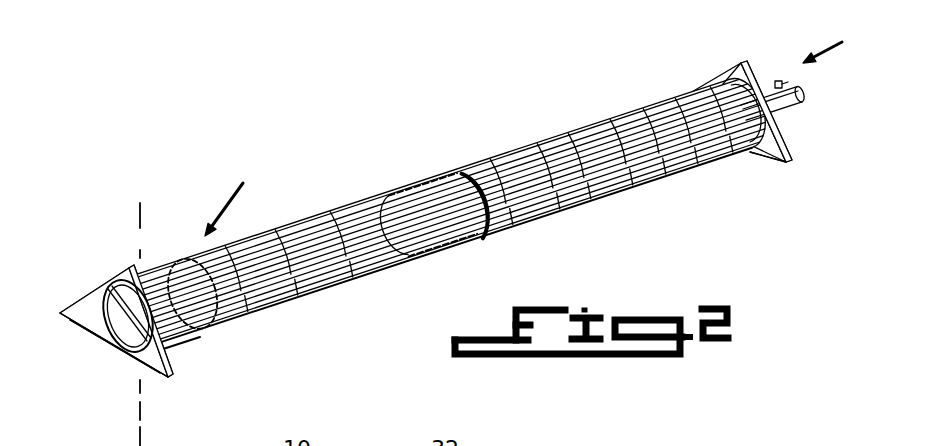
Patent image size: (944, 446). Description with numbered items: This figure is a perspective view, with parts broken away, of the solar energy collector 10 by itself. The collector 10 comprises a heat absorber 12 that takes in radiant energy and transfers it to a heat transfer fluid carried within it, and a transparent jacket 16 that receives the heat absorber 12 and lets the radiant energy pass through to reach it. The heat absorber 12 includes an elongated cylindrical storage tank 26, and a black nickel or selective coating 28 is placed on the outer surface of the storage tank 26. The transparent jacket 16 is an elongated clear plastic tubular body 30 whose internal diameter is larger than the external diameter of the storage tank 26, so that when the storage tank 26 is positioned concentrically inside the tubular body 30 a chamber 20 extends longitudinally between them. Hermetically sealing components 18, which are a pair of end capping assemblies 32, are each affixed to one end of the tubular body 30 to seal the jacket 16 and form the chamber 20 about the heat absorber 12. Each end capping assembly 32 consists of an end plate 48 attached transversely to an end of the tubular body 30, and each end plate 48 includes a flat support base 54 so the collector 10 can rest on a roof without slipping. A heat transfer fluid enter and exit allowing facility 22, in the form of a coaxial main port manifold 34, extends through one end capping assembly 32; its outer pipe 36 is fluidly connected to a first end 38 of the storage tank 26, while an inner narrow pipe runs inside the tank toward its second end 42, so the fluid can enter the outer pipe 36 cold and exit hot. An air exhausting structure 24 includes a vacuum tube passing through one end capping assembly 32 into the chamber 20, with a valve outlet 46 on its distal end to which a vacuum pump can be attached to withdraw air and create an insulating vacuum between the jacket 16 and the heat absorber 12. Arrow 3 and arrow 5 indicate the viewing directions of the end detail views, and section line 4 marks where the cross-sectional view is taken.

The view indicator 3 is at (829, 44).
The section line 4 is at (130, 223).
The view indicator 5 is at (224, 195).
The solar energy collector 10 is at (478, 128).
The heat absorber 12 is at (414, 188).
The transparent jacket 16 is at (598, 118).
The hermetically sealing components 18 is at (96, 352).
The chamber 20 is at (443, 251).
The heat transfer fluid enter and exit allowing facility 22 is at (797, 115).
The air exhausting structure 24 is at (777, 78).
The storage tank 26 is at (190, 345).
The black nickel or selective coating 28 is at (171, 284).
The tubular body 30 is at (597, 183).
The end capping assembly 32 is at (103, 283).
The coaxial main port manifold 34 is at (802, 101).
The outer pipe 36 is at (803, 77).
The first end 38 is at (747, 148).
The second end 42 is at (127, 328).
The valve outlet 46 is at (788, 82).
The end plate 48 is at (82, 312).
The flat support base 54 is at (151, 379).